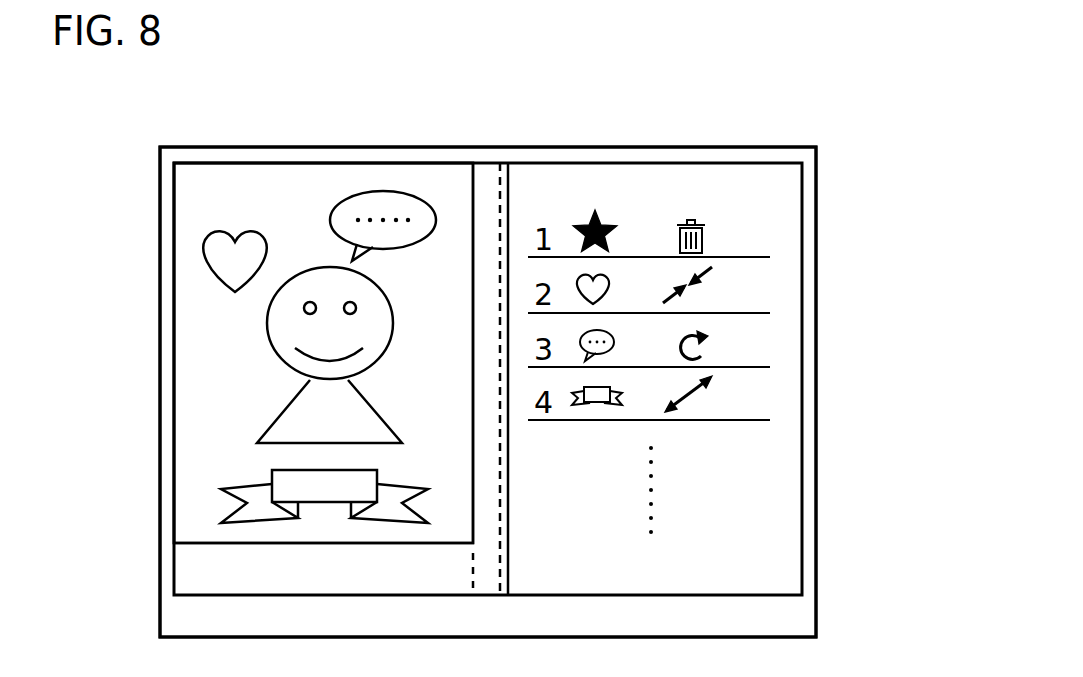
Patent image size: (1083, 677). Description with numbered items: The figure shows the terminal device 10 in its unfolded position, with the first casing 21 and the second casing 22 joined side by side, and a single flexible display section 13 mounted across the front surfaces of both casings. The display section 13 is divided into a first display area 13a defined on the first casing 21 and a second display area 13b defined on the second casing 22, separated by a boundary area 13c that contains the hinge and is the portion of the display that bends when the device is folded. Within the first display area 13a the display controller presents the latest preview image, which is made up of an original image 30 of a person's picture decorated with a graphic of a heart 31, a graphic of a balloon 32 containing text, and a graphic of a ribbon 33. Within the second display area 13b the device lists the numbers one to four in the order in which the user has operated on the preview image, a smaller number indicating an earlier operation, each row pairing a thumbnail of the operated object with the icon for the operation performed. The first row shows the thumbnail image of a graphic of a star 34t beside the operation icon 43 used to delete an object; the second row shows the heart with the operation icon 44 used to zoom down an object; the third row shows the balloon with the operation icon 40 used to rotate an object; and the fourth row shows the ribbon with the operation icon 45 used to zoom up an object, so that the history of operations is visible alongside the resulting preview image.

The terminal device 10 is at (481, 100).
The first casing 21 is at (167, 150).
The second casing 22 is at (800, 152).
The display section 13 is at (237, 163).
The first display area 13a is at (263, 190).
The second display area 13b is at (785, 195).
The boundary area 13c is at (485, 178).
The original image 30 is at (195, 355).
The graphic of a heart 31 is at (205, 255).
The graphic of a balloon 32 is at (377, 190).
The graphic of a ribbon 33 is at (222, 490).
The thumbnail image of a graphic of a star 34t is at (593, 210).
The operation icon 43 is at (692, 220).
The operation icon 44 is at (712, 280).
The operation icon 40 is at (700, 355).
The operation icon 45 is at (700, 390).